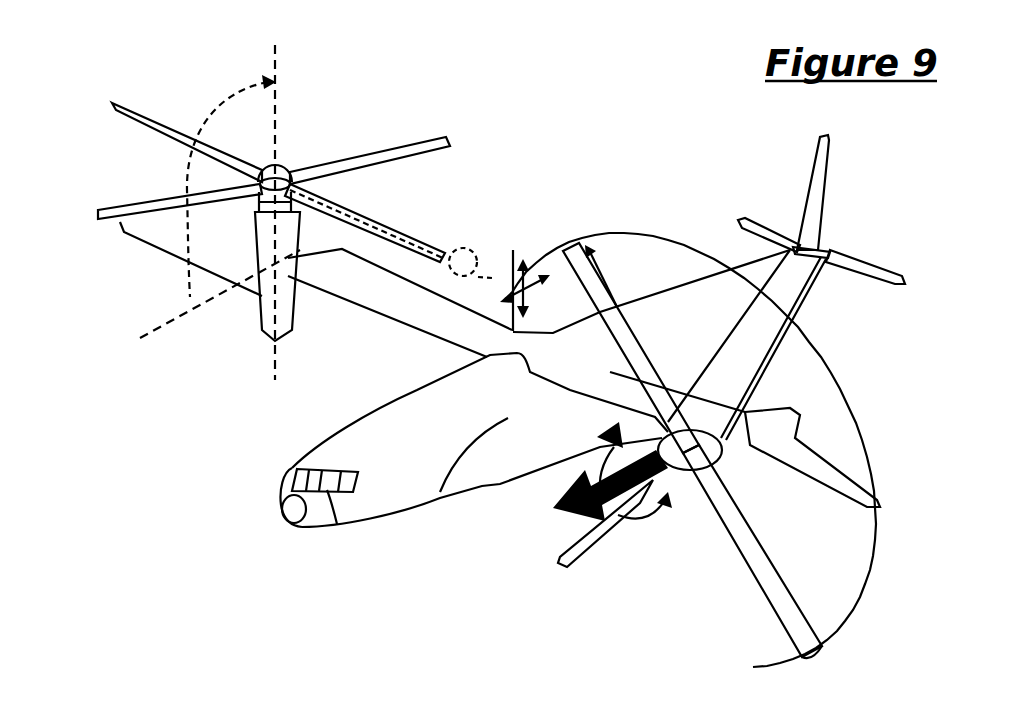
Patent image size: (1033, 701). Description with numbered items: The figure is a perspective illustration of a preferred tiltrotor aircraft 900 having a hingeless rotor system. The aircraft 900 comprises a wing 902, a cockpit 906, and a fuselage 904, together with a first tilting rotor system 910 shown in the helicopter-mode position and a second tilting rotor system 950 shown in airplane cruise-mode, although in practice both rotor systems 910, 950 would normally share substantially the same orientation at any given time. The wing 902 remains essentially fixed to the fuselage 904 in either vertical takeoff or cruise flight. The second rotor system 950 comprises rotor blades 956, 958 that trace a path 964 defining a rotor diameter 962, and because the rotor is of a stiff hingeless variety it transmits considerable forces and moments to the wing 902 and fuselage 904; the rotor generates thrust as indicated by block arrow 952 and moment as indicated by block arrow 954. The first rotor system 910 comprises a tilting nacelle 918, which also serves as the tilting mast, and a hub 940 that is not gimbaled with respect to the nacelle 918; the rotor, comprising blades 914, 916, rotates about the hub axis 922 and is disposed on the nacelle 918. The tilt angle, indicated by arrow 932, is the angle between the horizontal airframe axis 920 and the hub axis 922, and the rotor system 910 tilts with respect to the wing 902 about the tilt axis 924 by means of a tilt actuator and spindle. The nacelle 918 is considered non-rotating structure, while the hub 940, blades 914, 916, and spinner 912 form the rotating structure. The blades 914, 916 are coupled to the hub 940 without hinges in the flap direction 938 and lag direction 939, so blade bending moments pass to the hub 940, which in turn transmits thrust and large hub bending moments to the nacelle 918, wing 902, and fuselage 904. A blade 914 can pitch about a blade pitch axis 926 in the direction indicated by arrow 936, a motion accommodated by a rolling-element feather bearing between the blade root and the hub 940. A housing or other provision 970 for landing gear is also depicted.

The tiltrotor aircraft 900 is at (495, 467).
The wing 902 is at (385, 395).
The fuselage 904 is at (482, 514).
The cockpit 906 is at (322, 544).
The first tilting rotor system 910 is at (295, 223).
The spinner 912 is at (306, 135).
The first blade 914 is at (365, 221).
The second blade 916 is at (328, 161).
The tilting nacelle 918 is at (210, 293).
The horizontal airframe axis 920 is at (210, 331).
The hub axis 922 is at (329, 207).
The tilt axis 924 is at (400, 315).
The blade pitch axis 926 is at (460, 244).
The tilt angle 932 is at (213, 178).
The pitch direction arrow 936 is at (534, 255).
The flap direction 938 is at (597, 250).
The lag direction 939 is at (492, 333).
The hub 940 is at (320, 166).
The second tilting rotor system 950 is at (697, 401).
The thrust arrow 952 is at (671, 532).
The moment arrow 954 is at (703, 431).
The rotor blade 956 is at (746, 556).
The rotor blade 958 is at (648, 327).
The rotor diameter 962 is at (827, 592).
The path 964 is at (713, 450).
The landing gear provision 970 is at (547, 487).